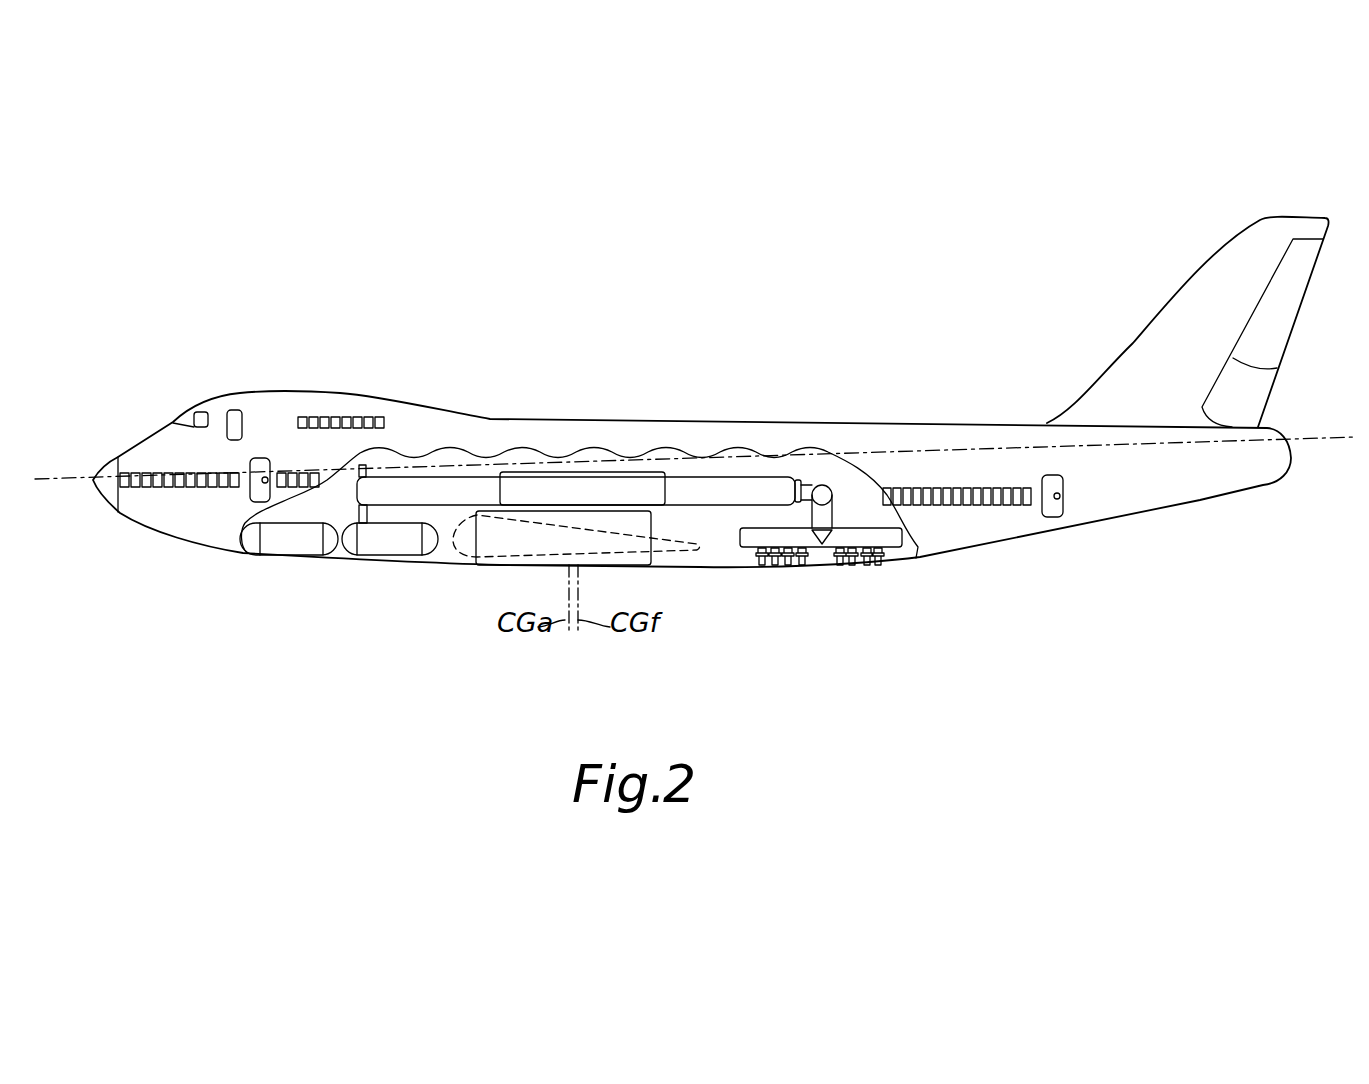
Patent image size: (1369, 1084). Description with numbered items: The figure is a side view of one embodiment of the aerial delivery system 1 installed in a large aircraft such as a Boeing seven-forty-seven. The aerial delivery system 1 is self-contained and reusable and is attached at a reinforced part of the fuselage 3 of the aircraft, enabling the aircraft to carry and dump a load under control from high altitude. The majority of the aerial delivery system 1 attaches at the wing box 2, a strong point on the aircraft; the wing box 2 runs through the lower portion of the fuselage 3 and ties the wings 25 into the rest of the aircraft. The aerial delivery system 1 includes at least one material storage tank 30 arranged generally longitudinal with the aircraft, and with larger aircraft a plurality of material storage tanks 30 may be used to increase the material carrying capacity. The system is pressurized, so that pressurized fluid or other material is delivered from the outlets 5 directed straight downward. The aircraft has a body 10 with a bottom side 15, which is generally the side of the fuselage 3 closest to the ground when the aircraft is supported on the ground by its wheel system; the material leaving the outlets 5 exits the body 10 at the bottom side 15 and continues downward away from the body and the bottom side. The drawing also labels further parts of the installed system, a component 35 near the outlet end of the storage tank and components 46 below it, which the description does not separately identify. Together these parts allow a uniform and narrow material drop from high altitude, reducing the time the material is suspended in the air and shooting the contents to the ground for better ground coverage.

The aerial delivery system 1 is at (680, 455).
The wing box 2 is at (651, 560).
The fuselage 3 is at (960, 447).
The outlets 5 is at (786, 567).
The body 10 is at (268, 407).
The bottom side 15 is at (715, 570).
The wings 25 is at (460, 550).
The material storage tank 30 is at (585, 480).
The discharge valve 35 is at (826, 513).
The compressed air tanks 46 is at (290, 557).